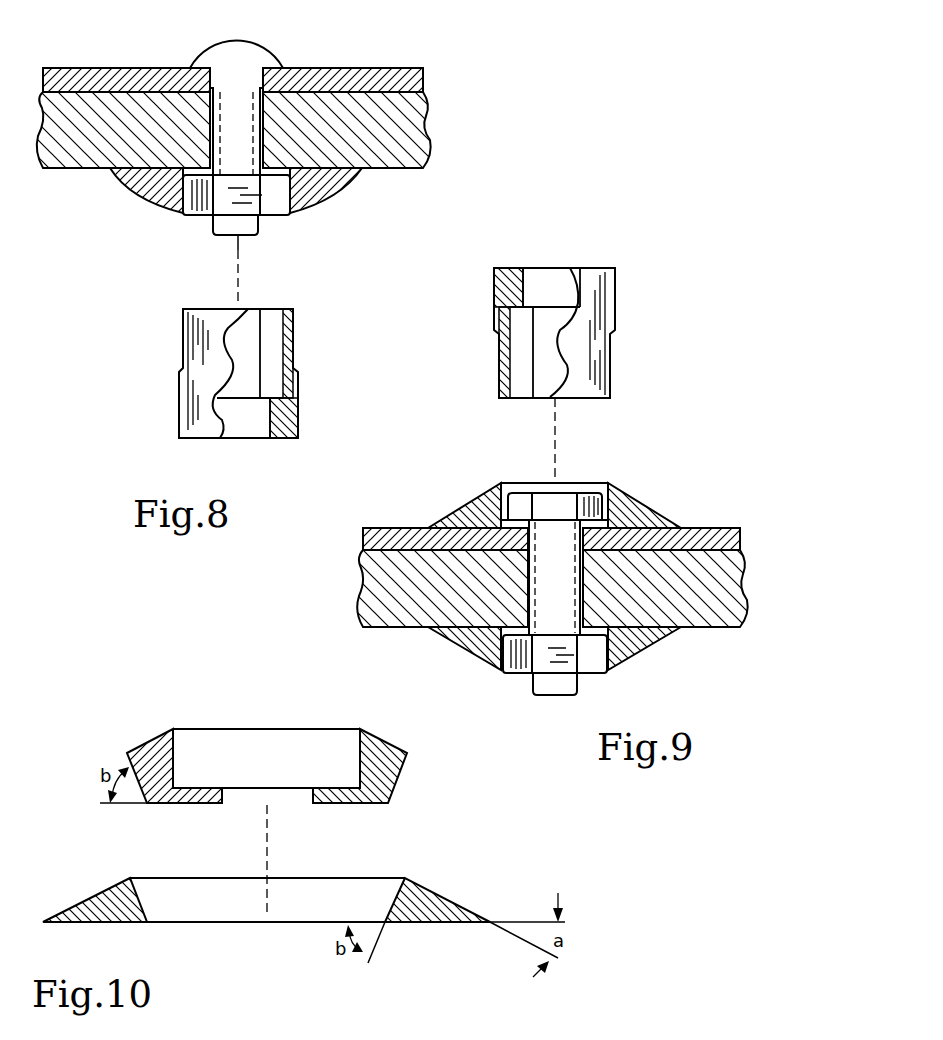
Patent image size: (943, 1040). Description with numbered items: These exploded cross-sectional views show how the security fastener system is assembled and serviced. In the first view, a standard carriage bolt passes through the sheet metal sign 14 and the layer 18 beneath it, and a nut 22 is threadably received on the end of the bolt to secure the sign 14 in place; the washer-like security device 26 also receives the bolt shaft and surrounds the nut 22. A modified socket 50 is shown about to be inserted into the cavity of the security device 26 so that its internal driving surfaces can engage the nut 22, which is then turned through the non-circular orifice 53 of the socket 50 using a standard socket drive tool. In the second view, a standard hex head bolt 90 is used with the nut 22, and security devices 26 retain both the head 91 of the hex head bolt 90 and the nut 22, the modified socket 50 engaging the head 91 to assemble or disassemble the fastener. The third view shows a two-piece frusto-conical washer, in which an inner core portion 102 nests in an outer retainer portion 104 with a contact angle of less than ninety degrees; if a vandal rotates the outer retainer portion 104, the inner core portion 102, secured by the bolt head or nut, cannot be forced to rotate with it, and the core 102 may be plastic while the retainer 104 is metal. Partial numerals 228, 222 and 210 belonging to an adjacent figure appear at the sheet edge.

In FIG. 8, the sheet metal sign 14 is at (342, 72).
In FIG. 9, the sheet metal sign 14 is at (702, 537).
In FIG. 8, the second panel layer 18 is at (408, 122).
In FIG. 9, the second panel layer 18 is at (710, 583).
In FIG. 8, the nut 22 is at (270, 205).
In FIG. 9, the nut 22 is at (590, 675).
In FIG. 8, the security device 26 is at (330, 180).
In FIG. 9, the security device 26 is at (462, 505).
In FIG. 8, the modified socket 50 is at (160, 386).
In FIG. 9, the modified socket 50 is at (628, 322).
In FIG. 8, the non-circular orifice 53 is at (246, 434).
In FIG. 9, the non-circular orifice 53 is at (555, 262).
In FIG. 9, the hex head bolt 90 is at (583, 490).
In FIG. 9, the head 91 is at (540, 500).
In FIG. 10, the inner core portion 102 is at (408, 733).
In FIG. 10, the outer retainer portion 104 is at (466, 884).
In FIG. 10, the component of next figure 228 is at (632, 1039).
In FIG. 10, the component of next figure 222 is at (525, 1037).
In FIG. 10, the component of next figure 210 is at (773, 1038).